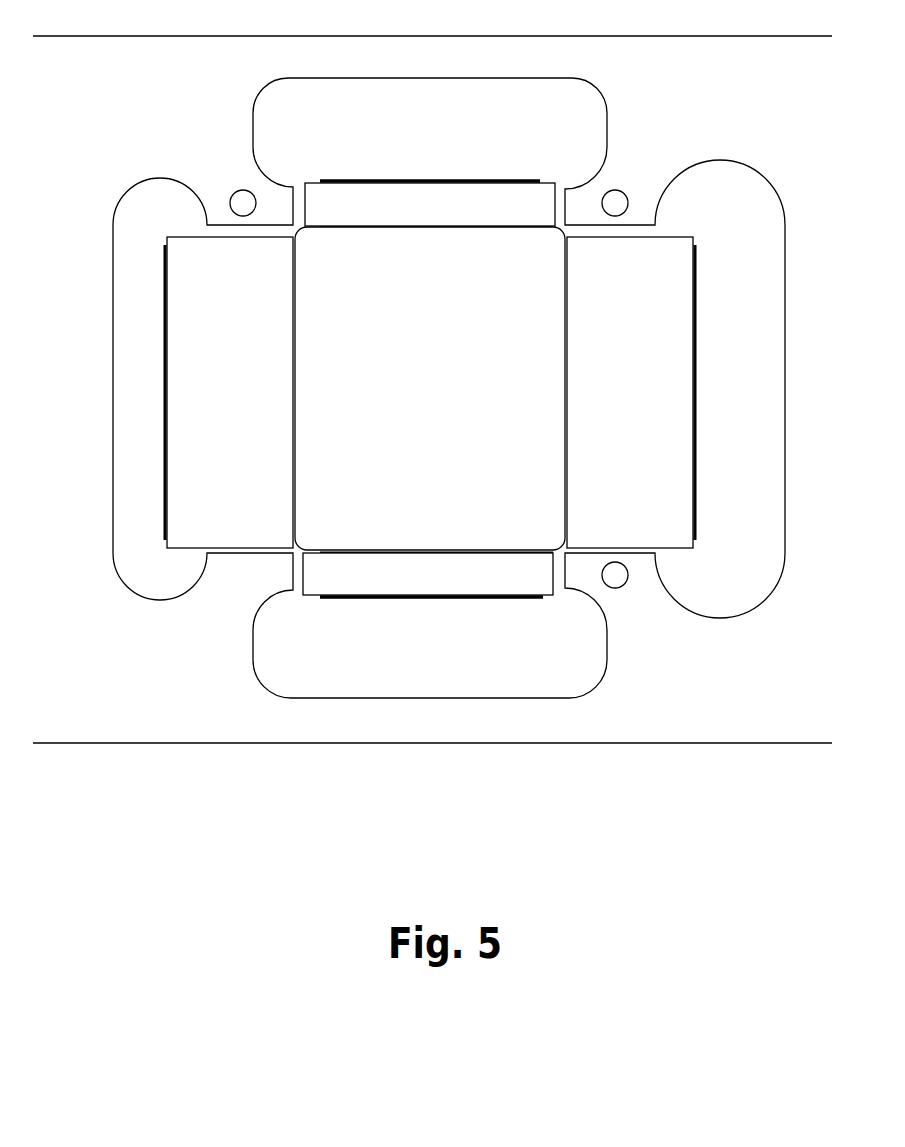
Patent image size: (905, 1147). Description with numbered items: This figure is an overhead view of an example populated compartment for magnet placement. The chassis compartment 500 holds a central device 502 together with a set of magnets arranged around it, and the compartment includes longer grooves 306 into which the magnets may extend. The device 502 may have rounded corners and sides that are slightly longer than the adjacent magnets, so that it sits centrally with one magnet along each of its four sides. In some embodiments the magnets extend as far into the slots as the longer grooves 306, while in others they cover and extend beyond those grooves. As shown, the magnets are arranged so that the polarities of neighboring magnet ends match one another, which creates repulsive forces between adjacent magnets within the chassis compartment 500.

The chassis compartment 500 is at (203, 840).
The device 502 is at (430, 388).
The longer grooves 306 is at (150, 413).